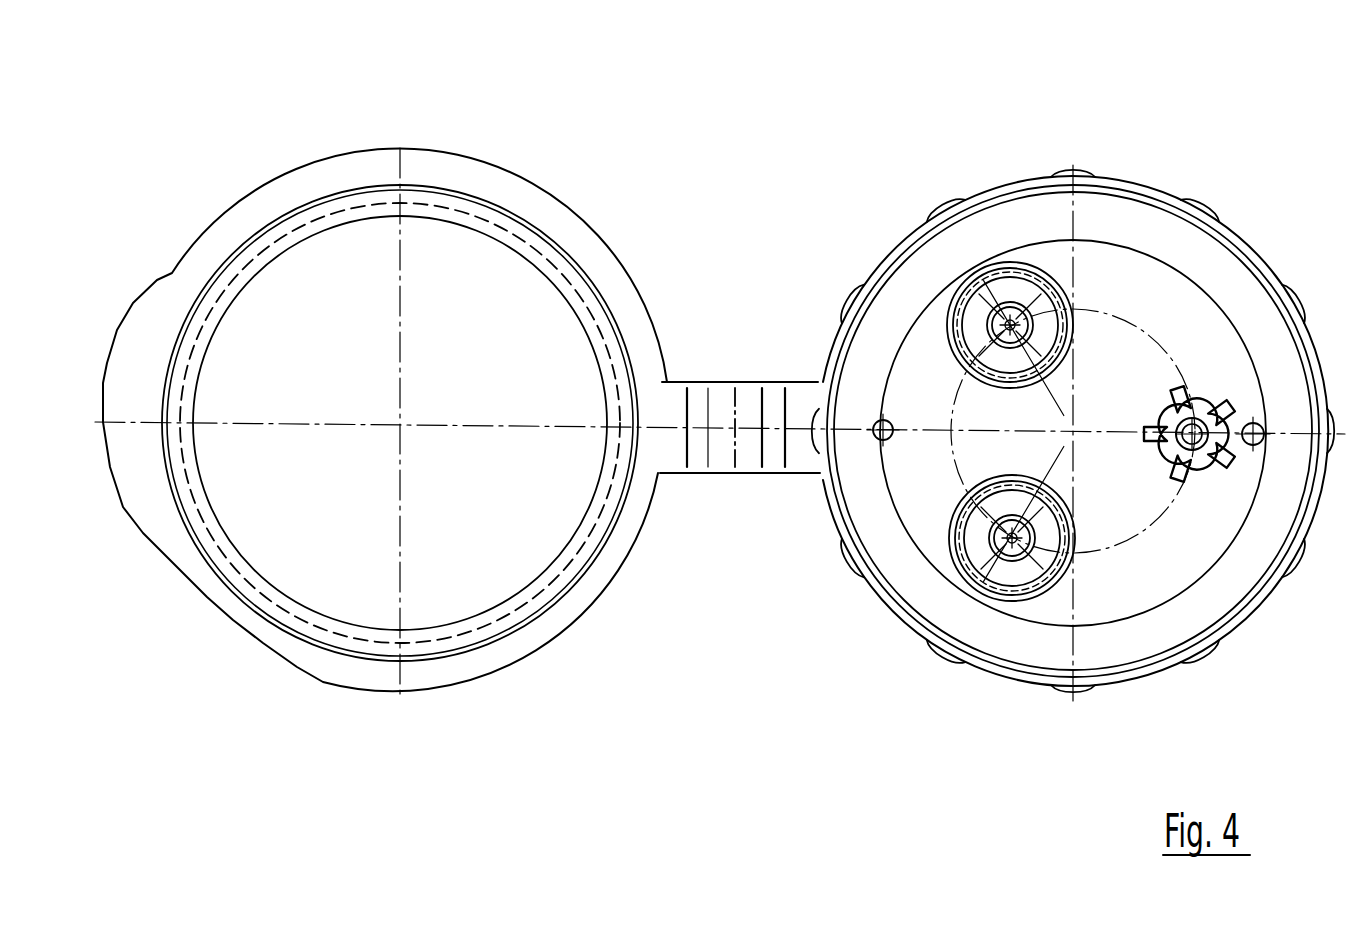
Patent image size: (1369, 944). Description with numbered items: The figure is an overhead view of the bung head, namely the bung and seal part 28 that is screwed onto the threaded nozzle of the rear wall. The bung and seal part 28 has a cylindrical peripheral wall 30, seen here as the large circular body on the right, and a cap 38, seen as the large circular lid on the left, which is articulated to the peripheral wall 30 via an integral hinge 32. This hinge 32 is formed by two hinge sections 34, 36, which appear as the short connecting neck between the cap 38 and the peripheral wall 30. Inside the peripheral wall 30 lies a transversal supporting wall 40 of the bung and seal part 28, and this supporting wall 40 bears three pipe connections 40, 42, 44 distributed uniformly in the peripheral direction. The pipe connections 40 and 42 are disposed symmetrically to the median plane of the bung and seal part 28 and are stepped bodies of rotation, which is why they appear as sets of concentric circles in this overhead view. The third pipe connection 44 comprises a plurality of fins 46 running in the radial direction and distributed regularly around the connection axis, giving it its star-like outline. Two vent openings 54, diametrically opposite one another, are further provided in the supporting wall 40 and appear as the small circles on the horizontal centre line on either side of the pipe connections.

The bung and seal part 28 is at (769, 178).
The cylindrical peripheral wall 30 is at (902, 610).
The integral hinge 32 is at (734, 352).
The hinge section 34 is at (689, 452).
The hinge section 36 is at (775, 455).
The cap 38 is at (296, 566).
The pipe connection 40 is at (1030, 612).
The pipe connection 42 is at (1003, 262).
The pipe connection 44 is at (1172, 395).
The fins 46 is at (1249, 350).
The vent openings 54 is at (894, 430).